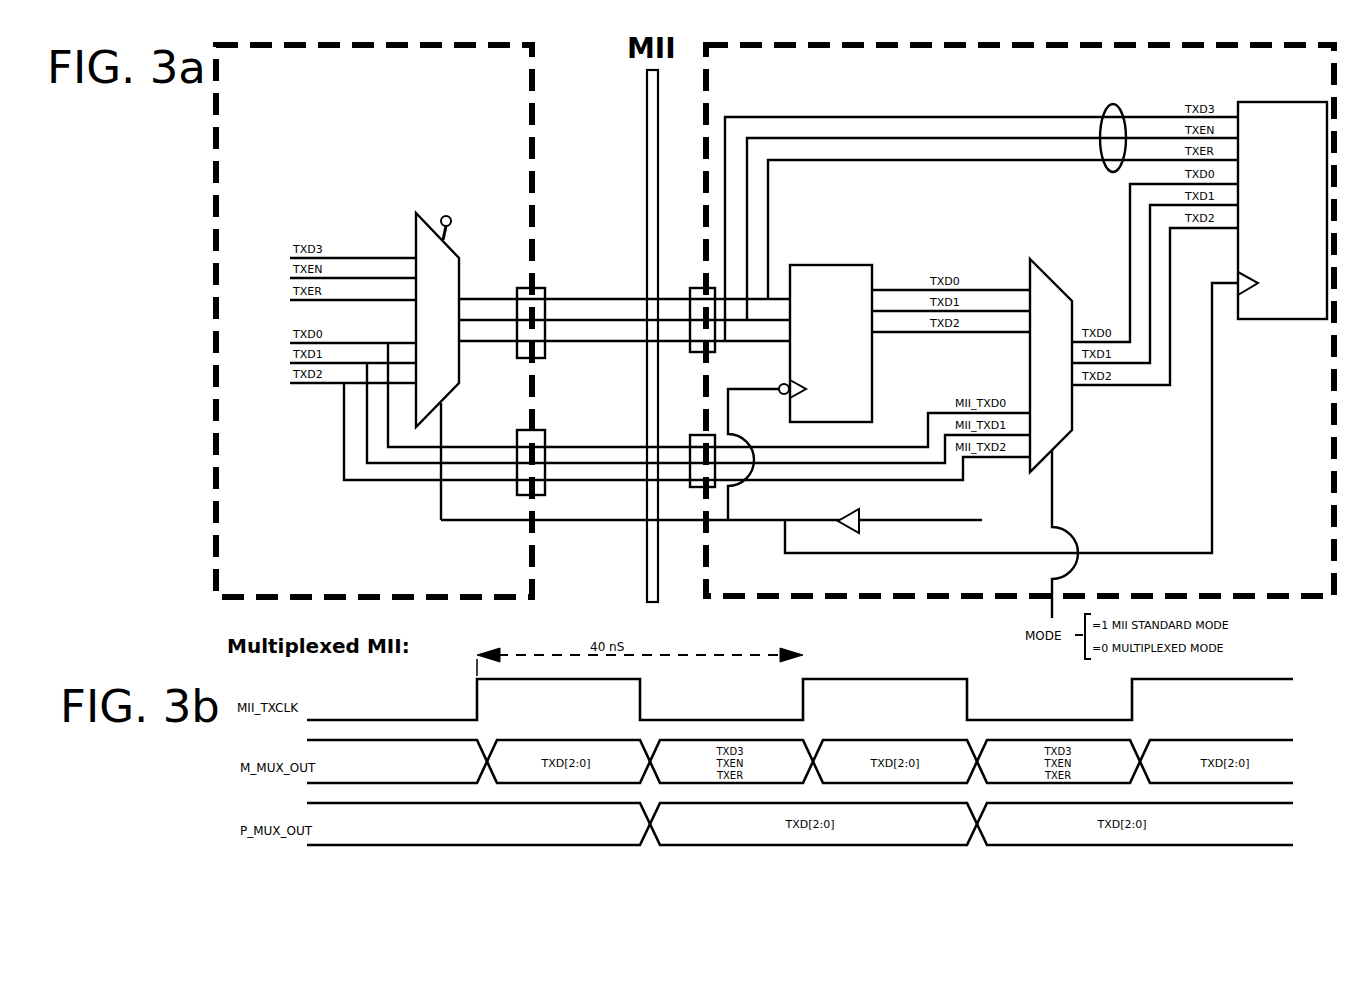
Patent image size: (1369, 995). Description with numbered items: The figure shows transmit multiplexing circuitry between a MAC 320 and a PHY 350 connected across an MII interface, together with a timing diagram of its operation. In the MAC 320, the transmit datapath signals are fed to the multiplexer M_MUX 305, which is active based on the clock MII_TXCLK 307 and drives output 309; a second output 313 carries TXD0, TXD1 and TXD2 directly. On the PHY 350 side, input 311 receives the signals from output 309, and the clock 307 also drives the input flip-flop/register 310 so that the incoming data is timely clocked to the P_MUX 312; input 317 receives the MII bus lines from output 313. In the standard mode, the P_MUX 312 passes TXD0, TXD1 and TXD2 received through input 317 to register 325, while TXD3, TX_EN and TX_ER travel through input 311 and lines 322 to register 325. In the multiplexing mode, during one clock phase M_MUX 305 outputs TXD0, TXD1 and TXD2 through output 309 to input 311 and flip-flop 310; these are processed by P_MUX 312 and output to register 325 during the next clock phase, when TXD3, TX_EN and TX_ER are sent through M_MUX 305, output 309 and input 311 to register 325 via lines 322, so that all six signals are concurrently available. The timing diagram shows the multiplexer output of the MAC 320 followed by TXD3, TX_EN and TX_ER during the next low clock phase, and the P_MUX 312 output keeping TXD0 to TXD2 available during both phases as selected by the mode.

The multiplexer (M_MUX) 305 is at (446, 396).
The MII_TXCLK clock 307 is at (948, 522).
The output 309 is at (537, 288).
The input flip-flop/register 310 is at (848, 265).
The input 311 is at (691, 289).
The P_MUX multiplexer 312 is at (1074, 416).
The output 313 is at (537, 430).
The input 317 is at (691, 436).
The MAC 320 is at (483, 105).
The lines 322 is at (1122, 110).
The register 325 is at (1275, 319).
The PHY 350 is at (1097, 105).